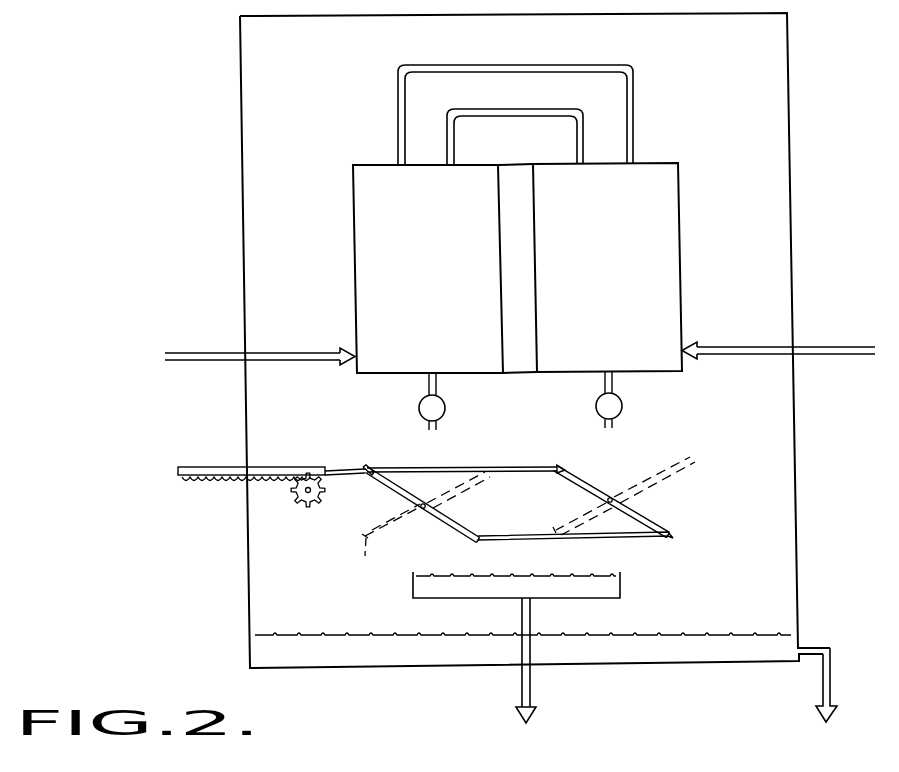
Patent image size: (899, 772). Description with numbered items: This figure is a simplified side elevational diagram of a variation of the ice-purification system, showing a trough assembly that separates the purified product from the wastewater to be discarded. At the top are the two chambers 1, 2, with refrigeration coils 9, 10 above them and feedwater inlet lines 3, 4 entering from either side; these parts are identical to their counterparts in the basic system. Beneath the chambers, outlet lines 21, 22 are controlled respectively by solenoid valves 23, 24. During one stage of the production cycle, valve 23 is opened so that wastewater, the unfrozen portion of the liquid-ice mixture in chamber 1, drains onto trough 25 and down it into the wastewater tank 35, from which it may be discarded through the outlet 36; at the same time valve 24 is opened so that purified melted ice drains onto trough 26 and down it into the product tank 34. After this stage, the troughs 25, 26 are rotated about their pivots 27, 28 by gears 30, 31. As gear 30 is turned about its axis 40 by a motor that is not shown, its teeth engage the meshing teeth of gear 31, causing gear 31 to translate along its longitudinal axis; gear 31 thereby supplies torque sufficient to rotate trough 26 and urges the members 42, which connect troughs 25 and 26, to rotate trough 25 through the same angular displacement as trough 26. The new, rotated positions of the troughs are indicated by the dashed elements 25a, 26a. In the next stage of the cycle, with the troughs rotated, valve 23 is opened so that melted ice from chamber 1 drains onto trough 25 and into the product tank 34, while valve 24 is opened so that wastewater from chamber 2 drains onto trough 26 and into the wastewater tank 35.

The chamber 1 is at (616, 281).
The chamber 2 is at (432, 287).
The feedwater inlet line 3 is at (730, 346).
The feedwater inlet line 4 is at (266, 352).
The refrigeration coil 9 is at (398, 68).
The refrigeration coil 10 is at (451, 112).
The outlet line 21 is at (613, 378).
The outlet line 22 is at (437, 381).
The solenoid valve 23 is at (623, 407).
The solenoid valve 24 is at (446, 410).
The trough 25 is at (646, 518).
The rotated position of trough 25a is at (693, 457).
The trough 26 is at (455, 518).
The rotated position of trough 26a is at (371, 546).
The pivot 27 is at (611, 496).
The pivot 28 is at (422, 509).
The gear 30 is at (294, 500).
The gear 31 is at (180, 479).
The product tank 34 is at (622, 596).
The wastewater tank 35 is at (800, 541).
The outlet 36 is at (830, 647).
The axis 40 is at (318, 506).
The members 42 is at (412, 467).